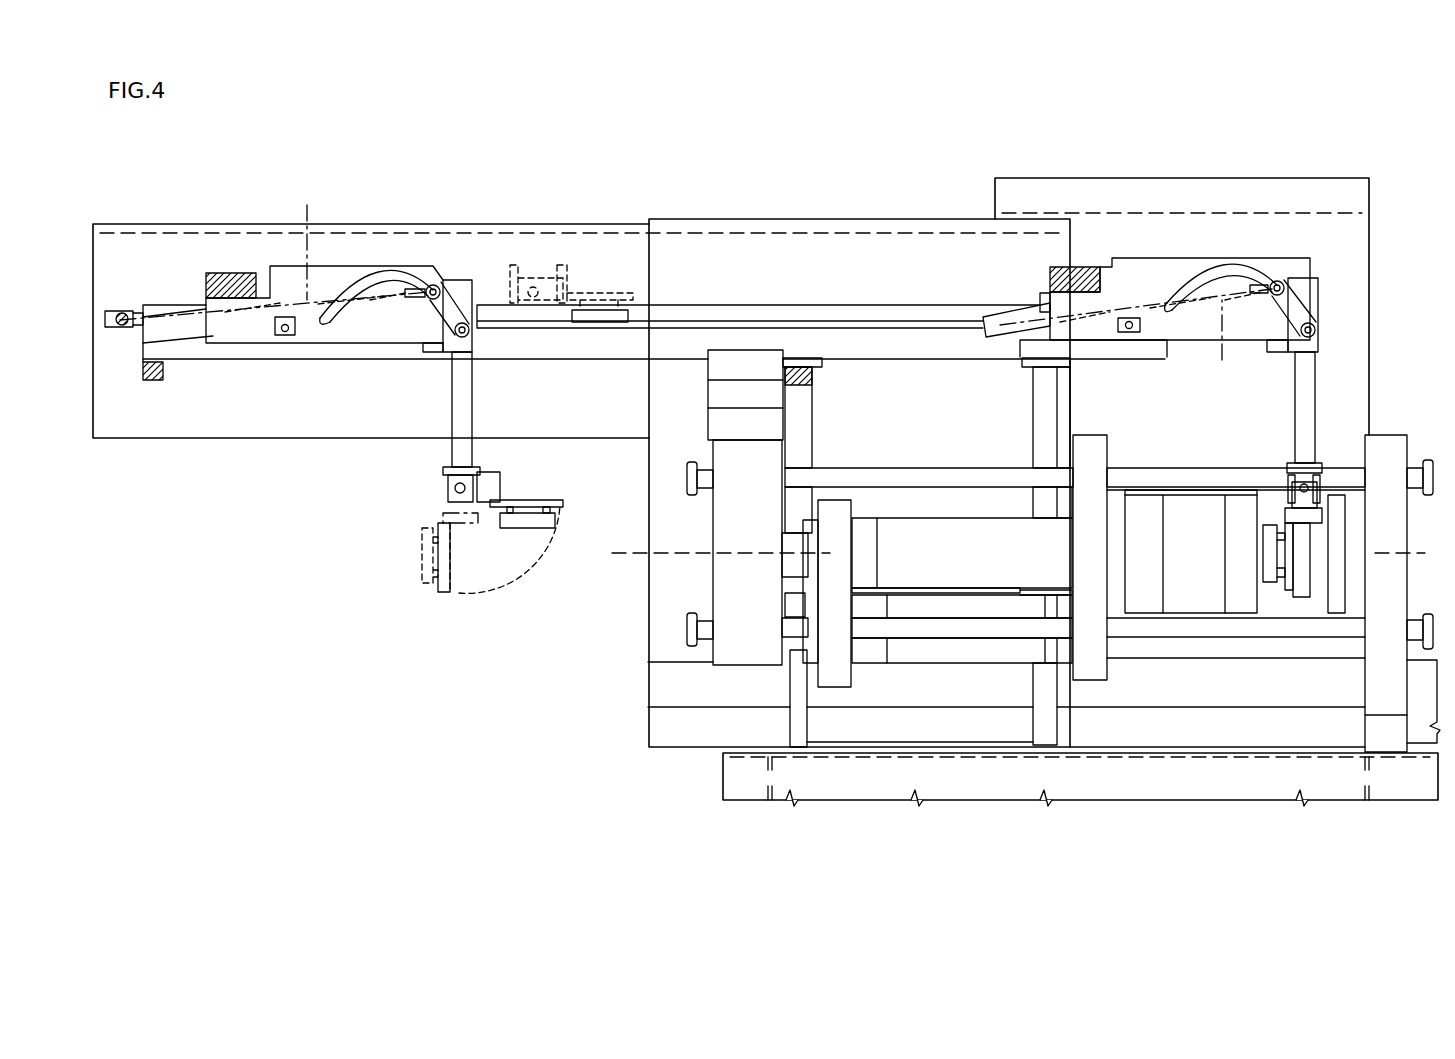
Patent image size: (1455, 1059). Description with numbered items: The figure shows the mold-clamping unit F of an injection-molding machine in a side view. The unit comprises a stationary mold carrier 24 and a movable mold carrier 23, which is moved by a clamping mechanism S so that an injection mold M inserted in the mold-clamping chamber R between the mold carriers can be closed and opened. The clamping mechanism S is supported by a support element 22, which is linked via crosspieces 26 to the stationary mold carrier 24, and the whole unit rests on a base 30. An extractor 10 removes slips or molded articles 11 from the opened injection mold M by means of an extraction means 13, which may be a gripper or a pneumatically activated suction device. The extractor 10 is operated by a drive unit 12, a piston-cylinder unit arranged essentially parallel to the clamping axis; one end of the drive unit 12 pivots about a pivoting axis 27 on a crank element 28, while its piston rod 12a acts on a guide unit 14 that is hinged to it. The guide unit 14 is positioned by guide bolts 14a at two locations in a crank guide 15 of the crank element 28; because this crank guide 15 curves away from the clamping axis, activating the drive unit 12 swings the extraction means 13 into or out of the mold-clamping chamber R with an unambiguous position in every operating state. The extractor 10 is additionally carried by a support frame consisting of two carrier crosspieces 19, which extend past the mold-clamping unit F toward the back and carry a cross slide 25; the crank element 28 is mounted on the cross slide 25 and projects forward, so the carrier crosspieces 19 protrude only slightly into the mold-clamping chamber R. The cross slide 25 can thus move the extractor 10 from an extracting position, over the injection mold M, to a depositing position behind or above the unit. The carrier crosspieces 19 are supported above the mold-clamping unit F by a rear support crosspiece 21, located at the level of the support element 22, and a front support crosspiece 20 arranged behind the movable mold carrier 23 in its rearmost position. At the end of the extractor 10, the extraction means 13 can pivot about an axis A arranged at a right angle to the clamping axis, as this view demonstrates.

The extractor 10 is at (440, 430).
The molded article 11 is at (527, 530).
The drive unit 12 is at (175, 335).
The piston rod 12a is at (770, 278).
The extraction means 13 is at (1293, 543).
The guide unit 14 is at (437, 350).
The guide bolts 14a is at (433, 285).
The crank guide 15 is at (372, 280).
The carrier crosspieces 19 is at (917, 347).
The front support crosspiece 20 is at (1043, 427).
The rear support crosspiece 21 is at (803, 426).
The support element 22 is at (762, 650).
The movable mold carrier 23 is at (1090, 462).
The stationary mold carrier 24 is at (1390, 440).
The cross slide 25 is at (232, 273).
The crosspieces 26 is at (1150, 625).
The pivoting axis 27 is at (290, 352).
The crank element 28 is at (1160, 258).
The machine base 30 is at (1160, 775).
The axis A is at (447, 488).
The mold-clamping chamber R is at (1275, 510).
The injection mold M is at (1238, 583).
The clamping mechanism S is at (1039, 567).
The mold-clamping unit F is at (1010, 762).